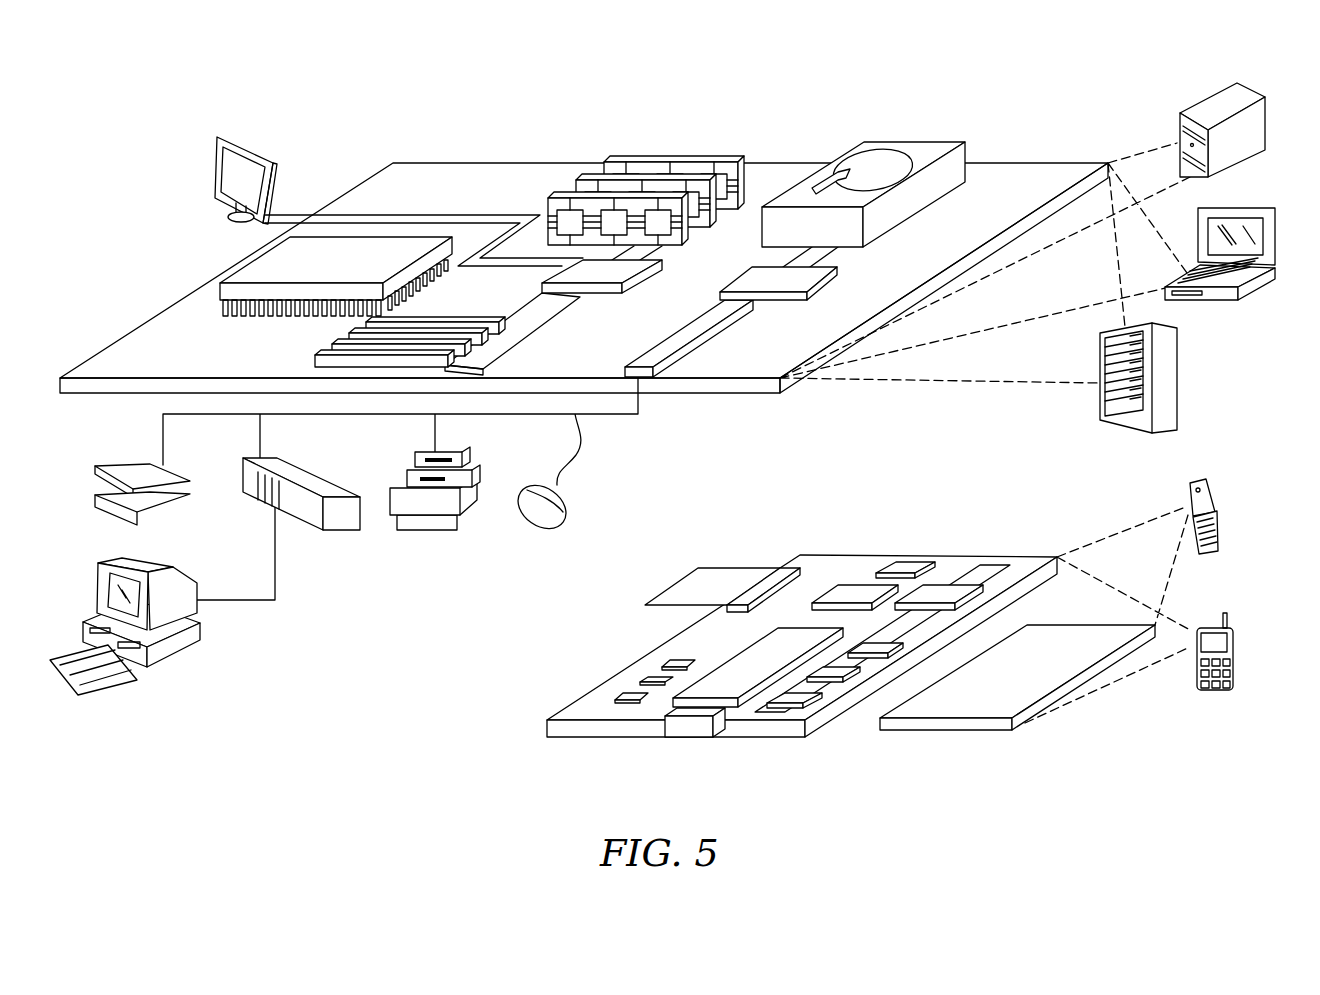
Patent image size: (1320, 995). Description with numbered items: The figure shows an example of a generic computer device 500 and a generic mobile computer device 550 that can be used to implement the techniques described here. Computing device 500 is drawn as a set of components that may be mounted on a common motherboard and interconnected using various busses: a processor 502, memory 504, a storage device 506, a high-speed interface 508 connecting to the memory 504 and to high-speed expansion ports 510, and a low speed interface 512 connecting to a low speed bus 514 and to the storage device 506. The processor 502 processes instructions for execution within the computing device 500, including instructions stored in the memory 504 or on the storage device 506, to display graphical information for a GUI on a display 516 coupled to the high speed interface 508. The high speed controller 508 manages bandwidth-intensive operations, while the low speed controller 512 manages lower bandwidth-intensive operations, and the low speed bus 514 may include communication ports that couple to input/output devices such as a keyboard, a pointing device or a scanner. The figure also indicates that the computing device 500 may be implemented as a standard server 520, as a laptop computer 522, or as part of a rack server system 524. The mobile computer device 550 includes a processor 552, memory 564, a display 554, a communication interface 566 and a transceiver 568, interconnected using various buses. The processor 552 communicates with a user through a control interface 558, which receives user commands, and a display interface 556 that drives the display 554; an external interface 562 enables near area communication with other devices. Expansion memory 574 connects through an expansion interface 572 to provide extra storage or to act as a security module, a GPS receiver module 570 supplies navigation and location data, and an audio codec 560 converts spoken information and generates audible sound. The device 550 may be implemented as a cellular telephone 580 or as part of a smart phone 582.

The computing device 500 is at (345, 118).
The processor 502 is at (244, 264).
The memory 504 is at (678, 156).
The storage device 506 is at (902, 141).
The high-speed interface 508 is at (614, 268).
The high-speed expansion ports 510 is at (342, 345).
The low speed interface 512 is at (753, 276).
The low speed bus 514 is at (645, 368).
The display 516 is at (222, 137).
The standard server 520 is at (1197, 108).
The laptop computer 522 is at (1250, 208).
The rack server system 524 is at (1177, 377).
The mobile computer device 550 is at (500, 746).
The processor 552 is at (730, 672).
The display 554 is at (1057, 640).
The display interface 556 is at (803, 695).
The control interface 558 is at (843, 672).
The audio codec 560 is at (880, 640).
The external interface 562 is at (690, 723).
The memory 564 is at (642, 678).
The communication interface 566 is at (855, 588).
The transceiver 568 is at (945, 588).
The GPS receiver module 570 is at (910, 562).
The expansion interface 572 is at (784, 565).
The expansion memory 574 is at (703, 568).
The cellular telephone 580 is at (1197, 480).
The smart phone 582 is at (1207, 628).